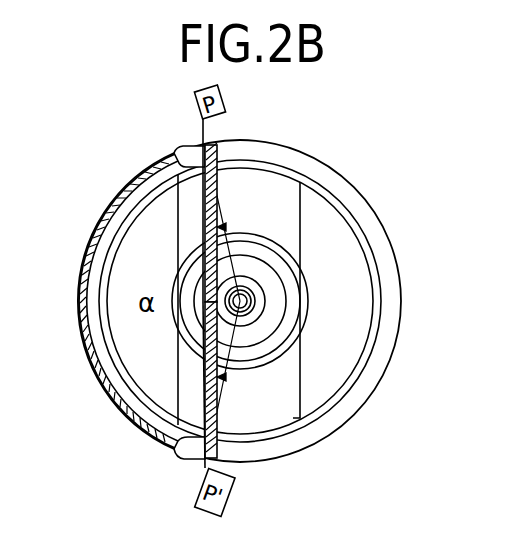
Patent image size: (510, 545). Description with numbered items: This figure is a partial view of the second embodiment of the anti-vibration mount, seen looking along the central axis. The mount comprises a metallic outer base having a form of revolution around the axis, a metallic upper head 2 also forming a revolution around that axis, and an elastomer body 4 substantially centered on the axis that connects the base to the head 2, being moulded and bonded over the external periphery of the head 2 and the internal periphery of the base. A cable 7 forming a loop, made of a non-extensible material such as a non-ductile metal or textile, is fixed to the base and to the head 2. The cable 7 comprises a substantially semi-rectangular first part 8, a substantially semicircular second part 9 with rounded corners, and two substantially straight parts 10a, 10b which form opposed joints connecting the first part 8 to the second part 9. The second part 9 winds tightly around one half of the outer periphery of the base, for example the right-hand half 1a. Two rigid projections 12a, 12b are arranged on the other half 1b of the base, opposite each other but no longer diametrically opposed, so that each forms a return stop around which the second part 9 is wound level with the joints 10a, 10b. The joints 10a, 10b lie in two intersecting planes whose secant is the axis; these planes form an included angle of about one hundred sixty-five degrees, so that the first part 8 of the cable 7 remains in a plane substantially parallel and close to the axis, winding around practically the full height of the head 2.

The right-hand half of the base 1a is at (130, 270).
The half of the base 1b is at (369, 240).
The upper head 2 is at (306, 321).
The elastomer body 4 is at (279, 196).
The cable 7 is at (241, 299).
The first part of the cable 8 is at (216, 190).
The second part of the cable 9 is at (107, 215).
The straight part (joint) 10a is at (208, 150).
The straight part (joint) 10b is at (212, 460).
The rigid projection 12a is at (176, 150).
The rigid projection 12b is at (190, 447).